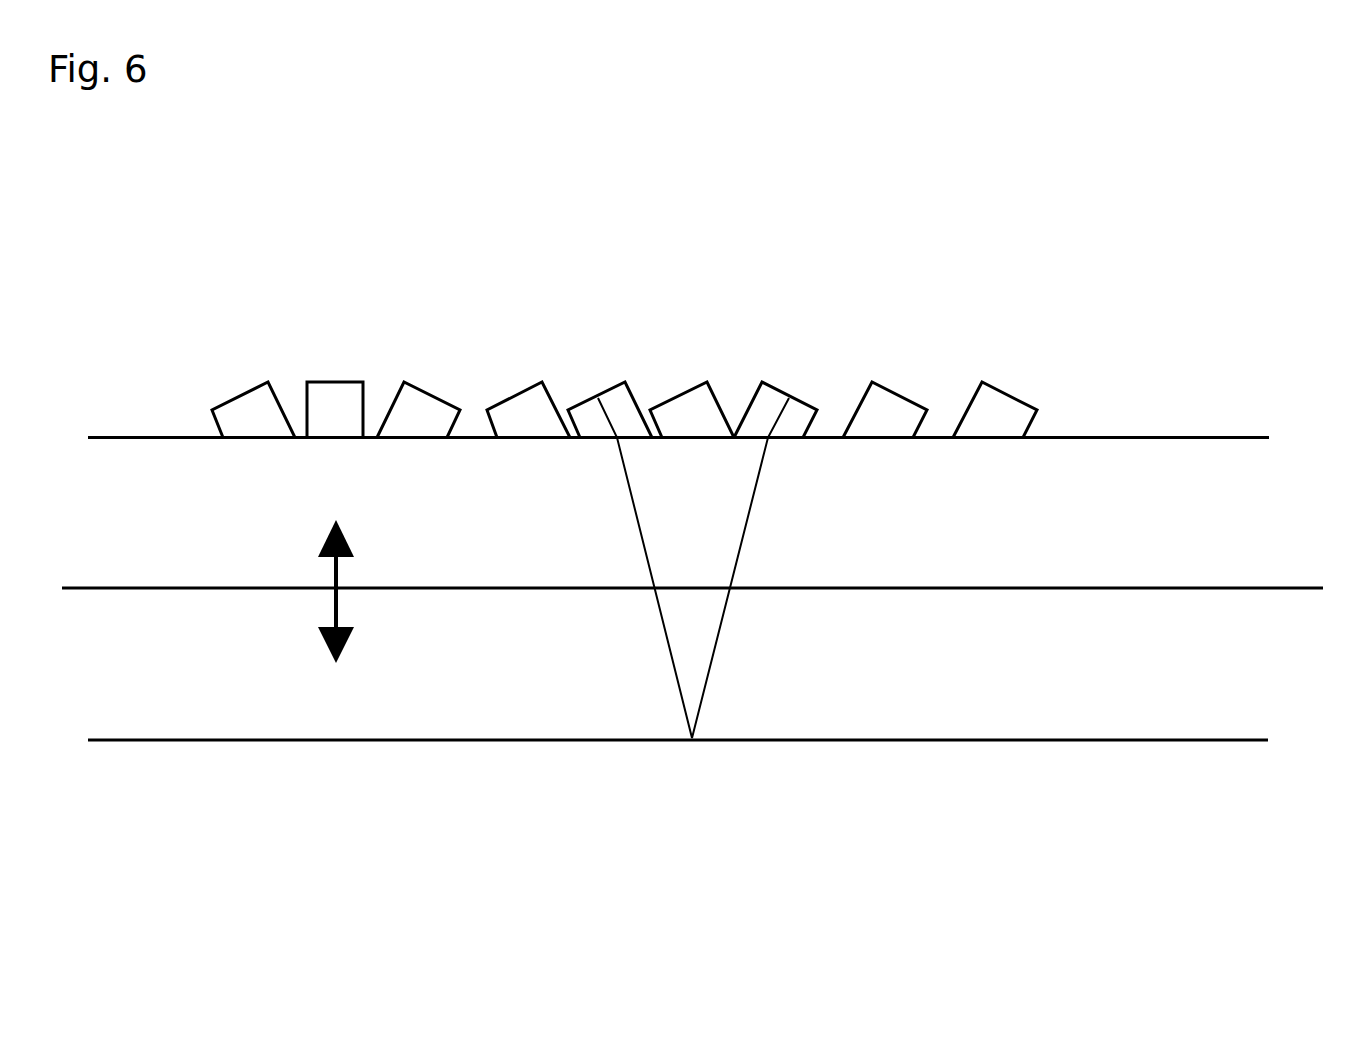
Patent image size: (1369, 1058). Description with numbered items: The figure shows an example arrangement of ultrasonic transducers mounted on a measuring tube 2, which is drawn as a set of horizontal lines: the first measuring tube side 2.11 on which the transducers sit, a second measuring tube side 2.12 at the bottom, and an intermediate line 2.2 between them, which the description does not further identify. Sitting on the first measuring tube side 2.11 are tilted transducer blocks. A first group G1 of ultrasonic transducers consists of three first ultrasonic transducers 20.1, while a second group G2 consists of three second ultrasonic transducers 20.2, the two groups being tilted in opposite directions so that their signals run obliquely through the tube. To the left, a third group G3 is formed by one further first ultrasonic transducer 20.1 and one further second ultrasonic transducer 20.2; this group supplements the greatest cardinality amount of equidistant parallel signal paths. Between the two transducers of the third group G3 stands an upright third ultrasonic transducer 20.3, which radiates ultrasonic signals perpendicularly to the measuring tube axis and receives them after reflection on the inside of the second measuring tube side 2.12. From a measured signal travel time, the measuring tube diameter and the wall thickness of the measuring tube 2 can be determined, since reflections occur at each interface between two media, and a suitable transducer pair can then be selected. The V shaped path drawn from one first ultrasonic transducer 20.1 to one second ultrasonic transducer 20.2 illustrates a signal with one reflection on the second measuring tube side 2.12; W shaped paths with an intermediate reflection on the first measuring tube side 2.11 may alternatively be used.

The measuring tube 2 is at (1167, 434).
The first measuring tube side 2.11 is at (1268, 412).
The focal plane / intermediate plane of carrier 2.2 is at (1268, 603).
The second measuring tube side 2.12 is at (1158, 768).
The first ultrasonic transducer 20.1 is at (473, 385).
The second ultrasonic transducer 20.2 is at (710, 385).
The third ultrasonic transducer 20.3 is at (338, 385).
The first group of ultrasonic transducers G1 is at (693, 328).
The second group of ultrasonic transducers G2 is at (995, 328).
The third group of ultrasonic transducers G3 is at (418, 300).